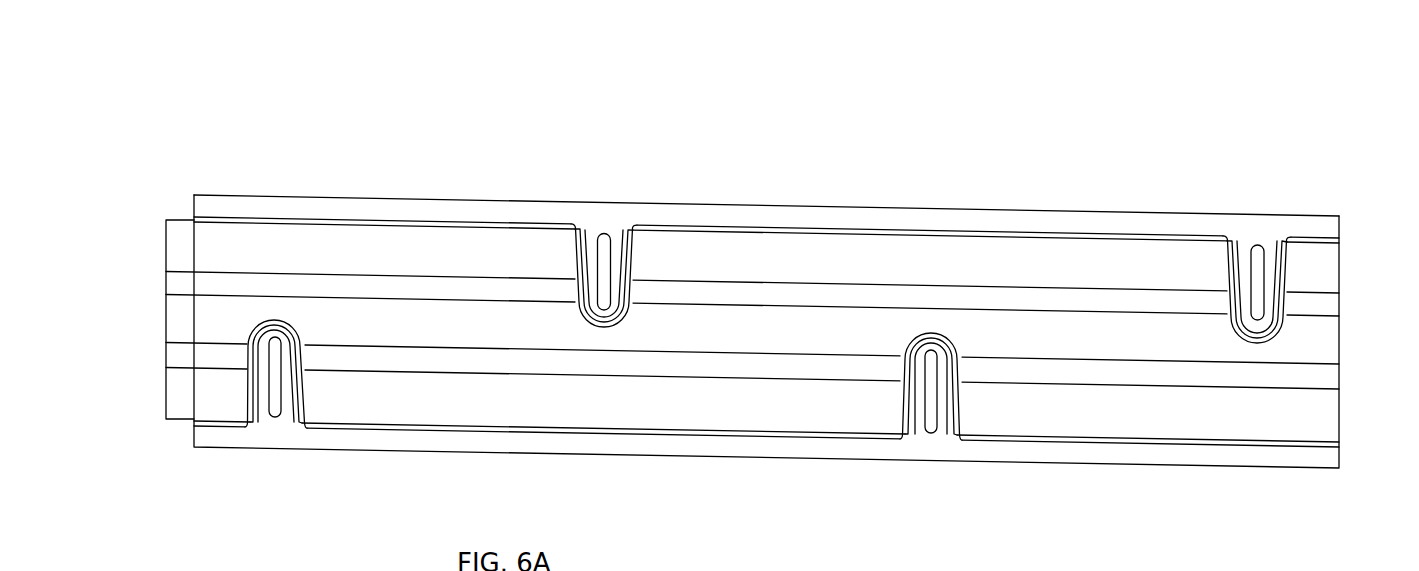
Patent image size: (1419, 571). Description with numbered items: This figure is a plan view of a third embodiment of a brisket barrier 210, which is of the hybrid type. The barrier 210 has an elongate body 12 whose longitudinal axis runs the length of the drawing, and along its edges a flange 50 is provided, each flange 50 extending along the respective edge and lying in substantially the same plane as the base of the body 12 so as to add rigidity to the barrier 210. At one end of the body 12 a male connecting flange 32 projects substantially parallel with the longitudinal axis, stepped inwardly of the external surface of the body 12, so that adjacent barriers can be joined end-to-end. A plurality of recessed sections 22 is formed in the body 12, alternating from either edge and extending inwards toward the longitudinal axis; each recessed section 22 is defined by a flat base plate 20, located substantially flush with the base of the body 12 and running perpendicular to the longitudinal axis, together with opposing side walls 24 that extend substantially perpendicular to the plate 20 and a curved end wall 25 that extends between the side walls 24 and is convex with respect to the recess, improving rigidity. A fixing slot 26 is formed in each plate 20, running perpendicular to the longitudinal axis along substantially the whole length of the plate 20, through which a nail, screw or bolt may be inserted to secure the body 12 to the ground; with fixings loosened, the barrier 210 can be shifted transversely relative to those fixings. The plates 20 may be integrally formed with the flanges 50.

The barrier 210 is at (1117, 138).
The body 12 is at (665, 413).
The flange 50 is at (767, 215).
The flange 32 is at (178, 390).
The plate 20 is at (258, 405).
The recessed section 22 is at (636, 258).
The side wall 24 is at (907, 385).
The end wall 25 is at (603, 328).
The fixing slot 26 is at (275, 415).